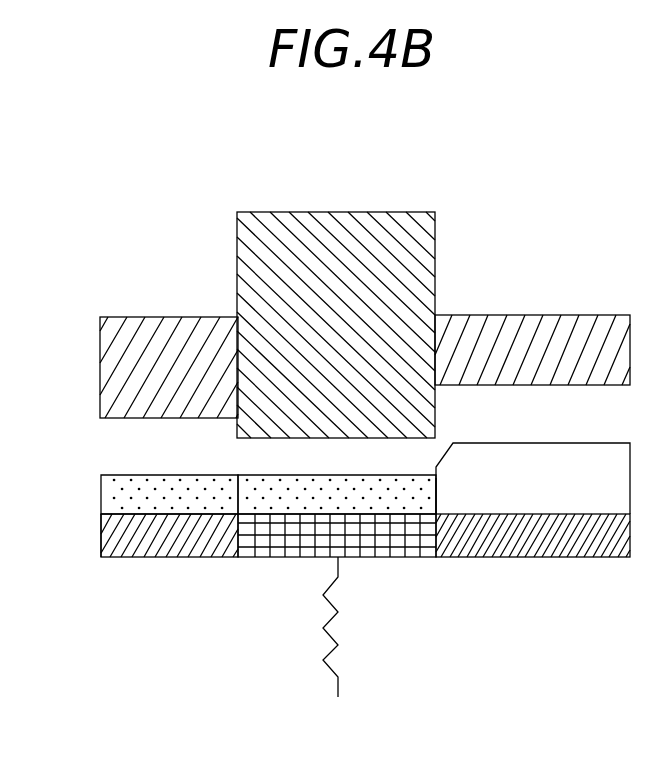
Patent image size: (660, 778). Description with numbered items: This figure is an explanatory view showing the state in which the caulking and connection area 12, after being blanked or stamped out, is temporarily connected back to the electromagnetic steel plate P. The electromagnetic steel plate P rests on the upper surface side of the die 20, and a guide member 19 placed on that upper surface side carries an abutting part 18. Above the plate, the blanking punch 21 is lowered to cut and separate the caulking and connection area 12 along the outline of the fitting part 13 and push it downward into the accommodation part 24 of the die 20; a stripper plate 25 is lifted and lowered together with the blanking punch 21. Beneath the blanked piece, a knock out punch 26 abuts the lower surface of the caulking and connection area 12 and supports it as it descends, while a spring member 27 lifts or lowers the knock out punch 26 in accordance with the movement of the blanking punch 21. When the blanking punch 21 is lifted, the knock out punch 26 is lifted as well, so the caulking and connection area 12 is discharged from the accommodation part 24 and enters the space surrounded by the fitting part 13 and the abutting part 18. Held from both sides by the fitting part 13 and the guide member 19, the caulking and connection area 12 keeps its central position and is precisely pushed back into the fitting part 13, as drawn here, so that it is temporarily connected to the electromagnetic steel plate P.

The caulking and connection area 12 is at (255, 506).
The fitting part 13 is at (238, 483).
The abutting part 18 is at (437, 482).
The guide member 19 is at (578, 492).
The die 20 is at (176, 575).
The blanking punch 21 is at (331, 212).
The accommodation part 24 is at (435, 483).
The stripper plate 25 is at (539, 303).
The knock out punch 26 is at (285, 547).
The spring member 27 is at (321, 630).
The electromagnetic steel plate P is at (117, 508).